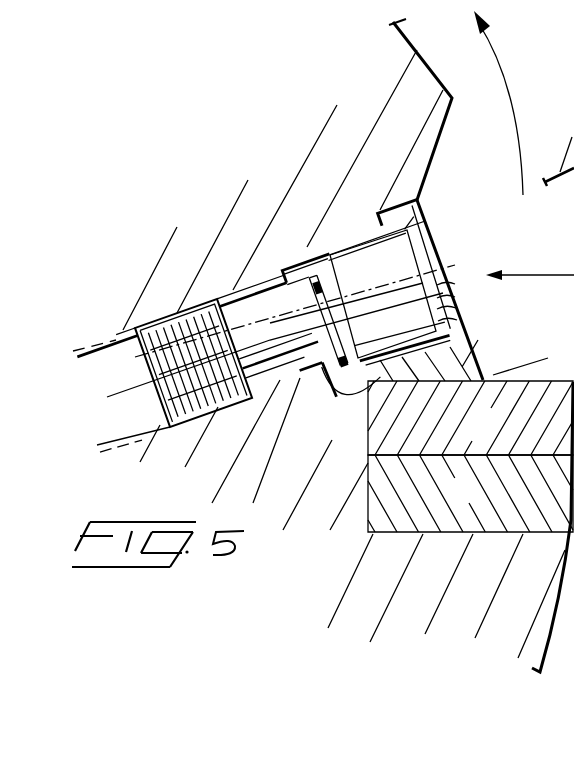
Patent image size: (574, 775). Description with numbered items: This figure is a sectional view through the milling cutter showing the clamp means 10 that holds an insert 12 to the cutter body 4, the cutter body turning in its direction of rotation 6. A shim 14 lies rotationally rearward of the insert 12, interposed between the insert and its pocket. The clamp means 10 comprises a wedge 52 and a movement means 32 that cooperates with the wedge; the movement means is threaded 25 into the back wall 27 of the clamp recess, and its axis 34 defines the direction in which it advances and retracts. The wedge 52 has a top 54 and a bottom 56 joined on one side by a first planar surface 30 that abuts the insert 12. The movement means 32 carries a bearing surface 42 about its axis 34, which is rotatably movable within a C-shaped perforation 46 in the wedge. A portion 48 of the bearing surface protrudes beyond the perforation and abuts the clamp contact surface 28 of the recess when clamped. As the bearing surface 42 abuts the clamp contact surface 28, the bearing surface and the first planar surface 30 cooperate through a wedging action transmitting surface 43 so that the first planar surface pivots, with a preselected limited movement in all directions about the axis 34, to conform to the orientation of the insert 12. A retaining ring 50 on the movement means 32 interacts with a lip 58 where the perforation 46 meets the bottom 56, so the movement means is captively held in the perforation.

The cutter body 4 is at (235, 163).
The direction of rotation 6 is at (504, 103).
The clamp means 10 is at (530, 282).
The insert 12 is at (477, 444).
The shim 14 is at (472, 510).
The thread 25 is at (231, 412).
The back wall 27 is at (312, 392).
The clamp contact surface 28 is at (333, 237).
The first planar surface 30 is at (347, 395).
The movement means 32 is at (424, 218).
The axis 34 is at (450, 268).
The bearing surface 42 is at (388, 280).
The wedging action transmitting surface 43 is at (470, 340).
The C-shaped perforation 46 is at (395, 345).
The bearing surface portion 48 is at (327, 255).
The retaining ring 50 is at (320, 299).
The wedge 52 is at (454, 376).
The top 54 is at (520, 353).
The bottom 56 is at (291, 360).
The lip 58 is at (350, 350).